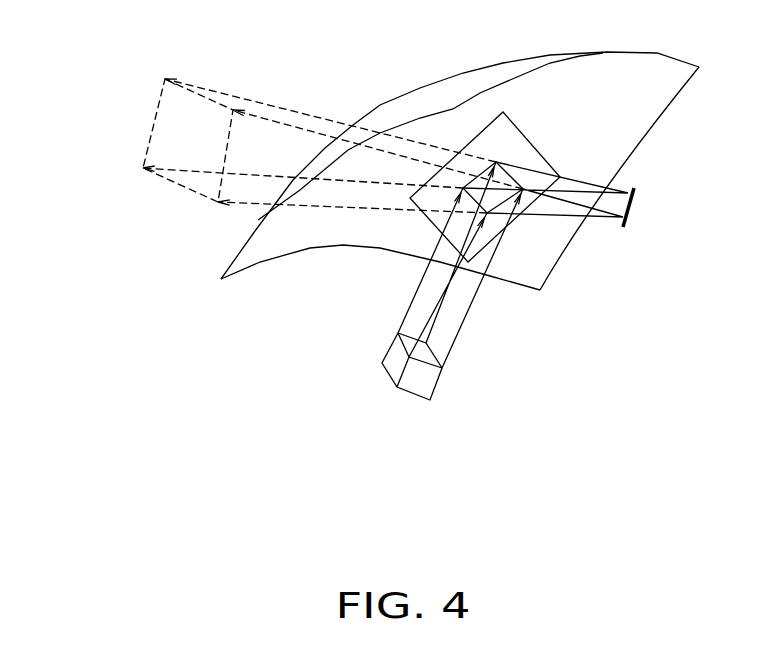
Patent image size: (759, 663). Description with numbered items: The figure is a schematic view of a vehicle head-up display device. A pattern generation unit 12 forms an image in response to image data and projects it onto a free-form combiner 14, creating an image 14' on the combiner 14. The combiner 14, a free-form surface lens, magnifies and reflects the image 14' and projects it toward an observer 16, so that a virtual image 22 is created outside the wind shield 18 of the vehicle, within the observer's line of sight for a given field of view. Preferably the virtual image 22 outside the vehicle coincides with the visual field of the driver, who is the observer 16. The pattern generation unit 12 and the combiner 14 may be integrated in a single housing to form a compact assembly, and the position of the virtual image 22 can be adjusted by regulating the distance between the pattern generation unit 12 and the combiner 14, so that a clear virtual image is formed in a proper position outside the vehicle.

The pattern generation unit 12 is at (437, 385).
The combiner 14 is at (501, 167).
The image 14' is at (545, 168).
The observer 16 is at (635, 207).
The wind shield 18 is at (418, 88).
The virtual image 22 is at (153, 128).